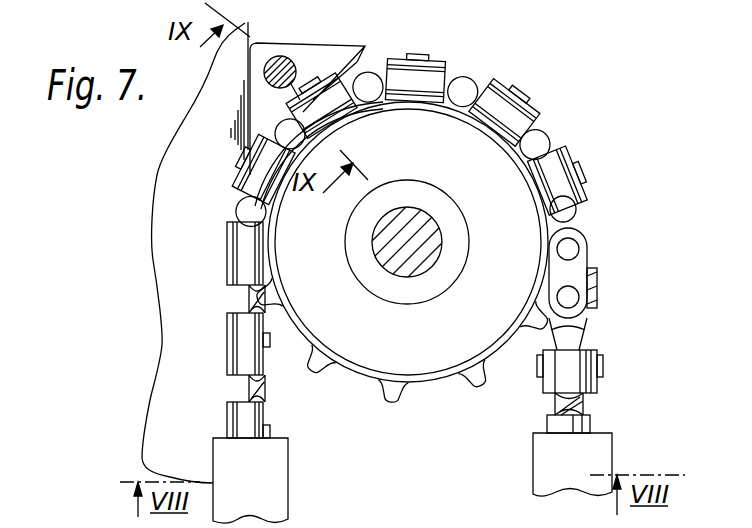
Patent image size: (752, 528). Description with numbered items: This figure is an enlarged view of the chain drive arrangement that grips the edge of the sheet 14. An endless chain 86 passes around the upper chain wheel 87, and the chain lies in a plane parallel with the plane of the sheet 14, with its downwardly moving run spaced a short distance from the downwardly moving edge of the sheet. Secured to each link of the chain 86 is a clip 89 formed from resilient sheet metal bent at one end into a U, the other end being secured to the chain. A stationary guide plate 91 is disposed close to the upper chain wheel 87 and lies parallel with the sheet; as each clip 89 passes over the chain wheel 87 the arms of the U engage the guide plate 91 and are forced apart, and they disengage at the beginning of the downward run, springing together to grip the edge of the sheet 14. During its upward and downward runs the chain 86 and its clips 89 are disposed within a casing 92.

The sheet 14 is at (191, 245).
The endless chain 86 is at (553, 403).
The upper chain wheel 87 is at (496, 169).
The clip 89 is at (503, 110).
The guide plate 91 is at (307, 62).
The casing 92 is at (268, 466).